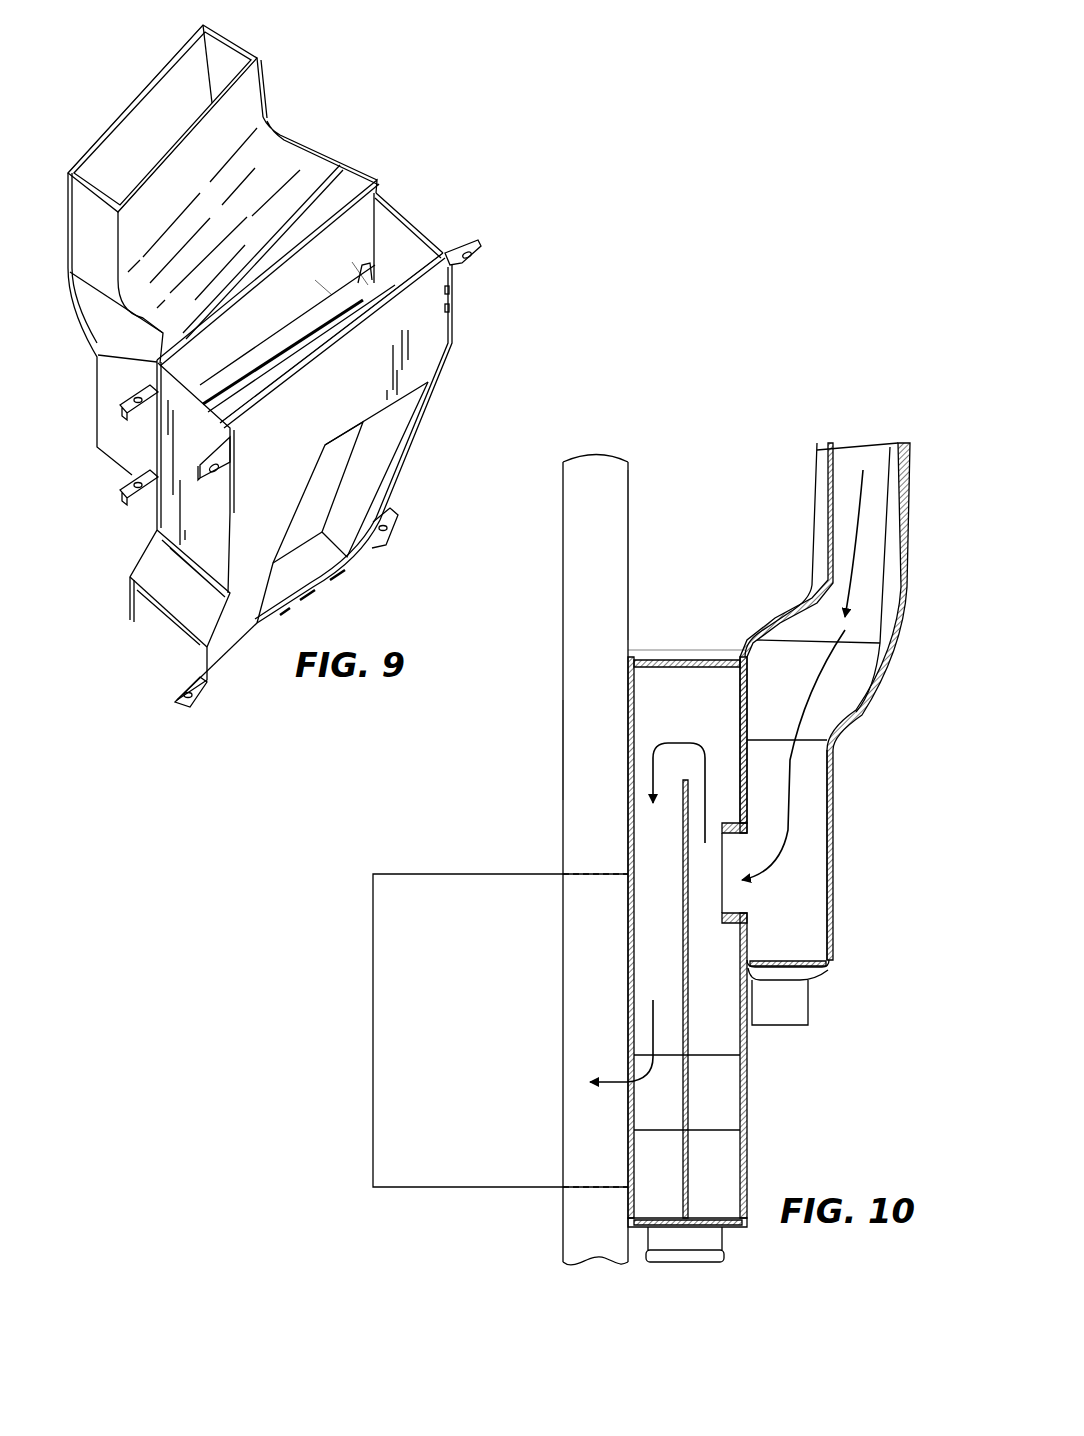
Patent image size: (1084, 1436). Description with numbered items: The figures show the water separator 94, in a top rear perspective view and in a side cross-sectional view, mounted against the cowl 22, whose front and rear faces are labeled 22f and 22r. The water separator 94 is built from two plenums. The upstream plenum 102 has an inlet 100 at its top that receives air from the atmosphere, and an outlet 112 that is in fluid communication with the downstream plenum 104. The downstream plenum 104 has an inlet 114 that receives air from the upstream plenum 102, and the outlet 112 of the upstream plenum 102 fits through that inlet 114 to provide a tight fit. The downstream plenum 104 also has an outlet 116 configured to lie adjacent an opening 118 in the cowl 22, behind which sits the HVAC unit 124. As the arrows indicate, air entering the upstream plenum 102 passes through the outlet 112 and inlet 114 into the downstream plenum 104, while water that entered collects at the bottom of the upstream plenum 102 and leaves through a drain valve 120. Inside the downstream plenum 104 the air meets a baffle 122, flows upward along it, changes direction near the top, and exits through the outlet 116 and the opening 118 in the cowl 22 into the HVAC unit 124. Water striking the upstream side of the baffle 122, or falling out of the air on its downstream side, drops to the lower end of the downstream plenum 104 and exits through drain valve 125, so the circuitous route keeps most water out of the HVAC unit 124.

In FIG. 10, the cowl 22 is at (588, 568).
In FIG. 10, the front side of panel 22f is at (634, 521).
In FIG. 10, the rear side of panel 22r is at (560, 747).
In FIG. 9, the water separator 94 is at (500, 276).
In FIG. 10, the water separator 94 is at (913, 724).
In FIG. 9, the inlet 100 is at (240, 43).
In FIG. 10, the inlet 100 is at (880, 443).
In FIG. 9, the upstream plenum 102 is at (110, 398).
In FIG. 10, the upstream plenum 102 is at (833, 883).
In FIG. 9, the downstream plenum 104 is at (190, 603).
In FIG. 10, the downstream plenum 104 is at (745, 1152).
In FIG. 9, the outlet 112 is at (365, 285).
In FIG. 10, the outlet 112 is at (727, 818).
In FIG. 9, the inlet 114 is at (328, 293).
In FIG. 10, the inlet 114 is at (728, 930).
In FIG. 9, the outlet 116 is at (398, 455).
In FIG. 10, the outlet 116 is at (628, 1108).
In FIG. 10, the opening 118 is at (598, 873).
In FIG. 10, the drain valve 120 is at (780, 1027).
In FIG. 9, the baffle 122 is at (400, 252).
In FIG. 10, the baffle 122 is at (688, 1078).
In FIG. 10, the HVAC unit 124 is at (373, 1005).
In FIG. 10, the drain valve 125 is at (700, 1262).